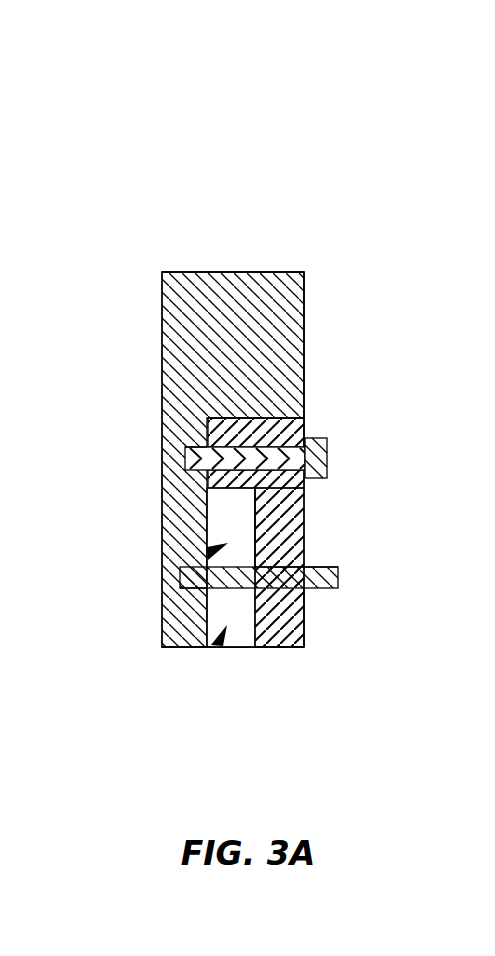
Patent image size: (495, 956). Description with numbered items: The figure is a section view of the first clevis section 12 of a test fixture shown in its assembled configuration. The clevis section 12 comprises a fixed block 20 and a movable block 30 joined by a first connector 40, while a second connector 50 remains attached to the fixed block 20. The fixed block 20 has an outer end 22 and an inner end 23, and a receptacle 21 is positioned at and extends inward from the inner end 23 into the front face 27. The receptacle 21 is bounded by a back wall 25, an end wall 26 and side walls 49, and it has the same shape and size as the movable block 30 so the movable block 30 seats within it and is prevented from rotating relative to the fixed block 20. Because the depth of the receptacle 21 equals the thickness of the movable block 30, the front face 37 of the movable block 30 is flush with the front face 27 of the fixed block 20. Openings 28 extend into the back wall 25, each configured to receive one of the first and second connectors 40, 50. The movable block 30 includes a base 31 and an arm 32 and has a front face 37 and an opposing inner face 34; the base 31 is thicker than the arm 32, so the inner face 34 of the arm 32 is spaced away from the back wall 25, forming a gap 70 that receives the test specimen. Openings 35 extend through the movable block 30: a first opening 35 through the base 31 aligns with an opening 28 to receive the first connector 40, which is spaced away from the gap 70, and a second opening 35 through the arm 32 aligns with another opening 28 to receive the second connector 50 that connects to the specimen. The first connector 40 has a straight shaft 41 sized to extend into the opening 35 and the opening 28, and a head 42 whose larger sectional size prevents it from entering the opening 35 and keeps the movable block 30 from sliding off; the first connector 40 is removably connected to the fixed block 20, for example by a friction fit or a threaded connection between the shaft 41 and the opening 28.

The clevis section 12 is at (104, 268).
The fixed block 20 is at (280, 297).
The receptacle 21 is at (215, 552).
The outer end 22 is at (252, 268).
The inner end 23 is at (182, 648).
The back wall 25 is at (208, 510).
The end wall 26 is at (253, 418).
The front face 27 is at (304, 402).
The openings 28 is at (195, 445).
The movable block 30 is at (280, 527).
The base 31 is at (233, 418).
The arm 32 is at (290, 648).
The inner face 34 is at (250, 520).
The openings 35 is at (304, 432).
The front face 37 is at (238, 552).
The first connector 40 is at (328, 446).
The shaft 41 is at (287, 440).
The head 42 is at (322, 462).
The side walls 49 is at (290, 559).
The second connector 50 is at (323, 588).
The gap 70 is at (222, 640).